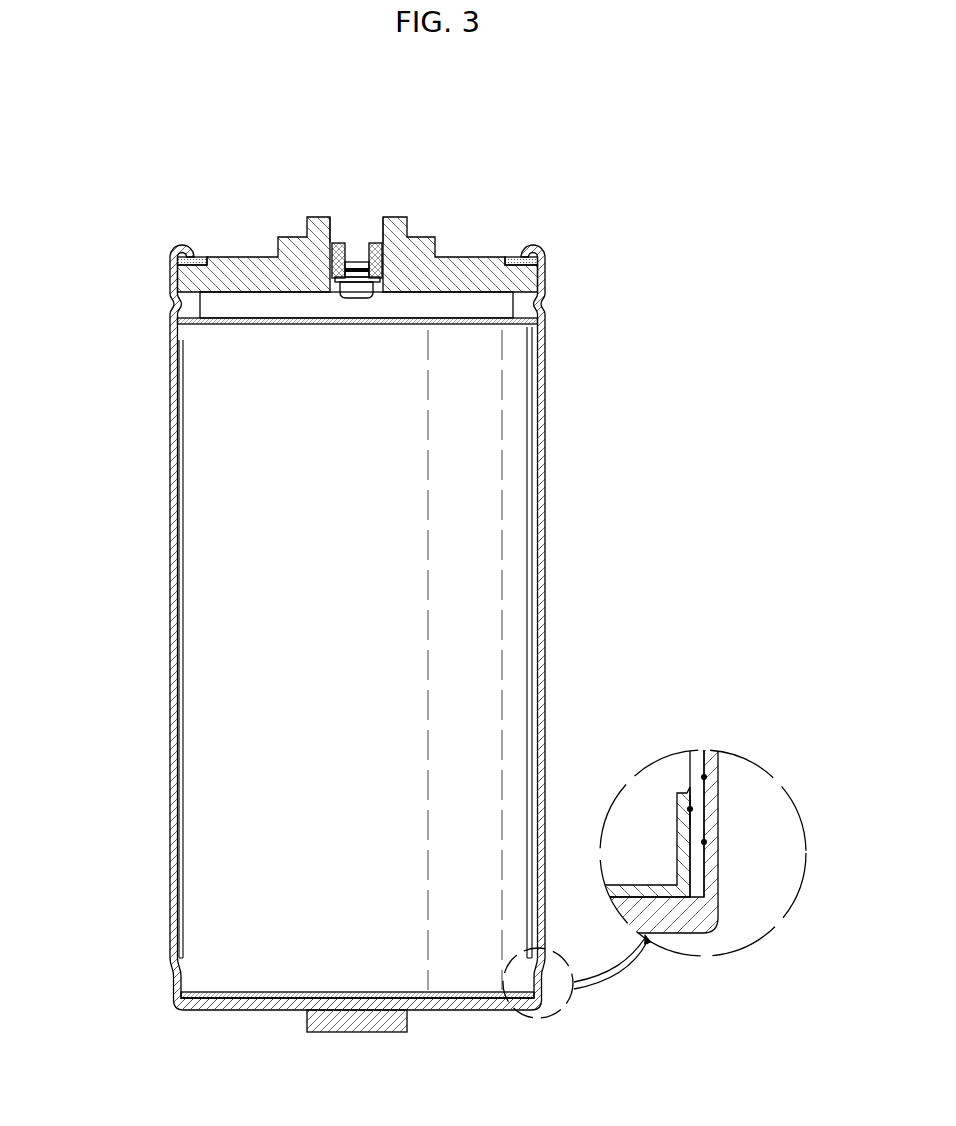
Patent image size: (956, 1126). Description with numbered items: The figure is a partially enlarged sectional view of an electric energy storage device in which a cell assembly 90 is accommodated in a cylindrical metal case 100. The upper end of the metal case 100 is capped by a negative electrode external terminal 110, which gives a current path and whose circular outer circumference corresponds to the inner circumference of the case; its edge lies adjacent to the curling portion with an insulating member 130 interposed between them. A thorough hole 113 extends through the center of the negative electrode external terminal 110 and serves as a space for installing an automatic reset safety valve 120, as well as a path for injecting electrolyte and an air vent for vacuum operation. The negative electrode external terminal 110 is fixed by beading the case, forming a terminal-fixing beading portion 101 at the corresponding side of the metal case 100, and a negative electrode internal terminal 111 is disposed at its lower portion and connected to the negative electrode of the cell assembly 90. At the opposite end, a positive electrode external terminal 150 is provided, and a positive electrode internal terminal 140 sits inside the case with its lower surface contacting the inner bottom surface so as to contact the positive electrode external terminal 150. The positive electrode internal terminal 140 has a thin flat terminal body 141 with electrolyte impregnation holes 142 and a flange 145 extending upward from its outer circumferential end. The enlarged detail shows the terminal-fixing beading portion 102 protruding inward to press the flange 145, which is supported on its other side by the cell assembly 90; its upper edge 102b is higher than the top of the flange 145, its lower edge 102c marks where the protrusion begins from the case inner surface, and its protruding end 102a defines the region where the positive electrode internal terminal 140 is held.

The cell assembly 90 is at (191, 540).
The metal case 100 is at (170, 472).
The terminal-fixing beading portion 101 is at (166, 300).
The terminal-fixing beading portion 102 is at (714, 808).
The protruding end 102a is at (691, 809).
The upper edge 102b is at (705, 777).
The lower edge 102c is at (705, 842).
The negative electrode external terminal 110 is at (468, 242).
The negative electrode internal terminal 111 is at (437, 317).
The thorough hole 113 is at (363, 221).
The automatic reset safety valve 120 is at (363, 290).
The insulating member 130 is at (186, 259).
The positive electrode internal terminal 140 is at (311, 984).
The terminal body 141 is at (421, 999).
The electrolyte impregnation holes 142 is at (477, 996).
The flange 145 is at (677, 832).
The positive electrode external terminal 150 is at (368, 1031).